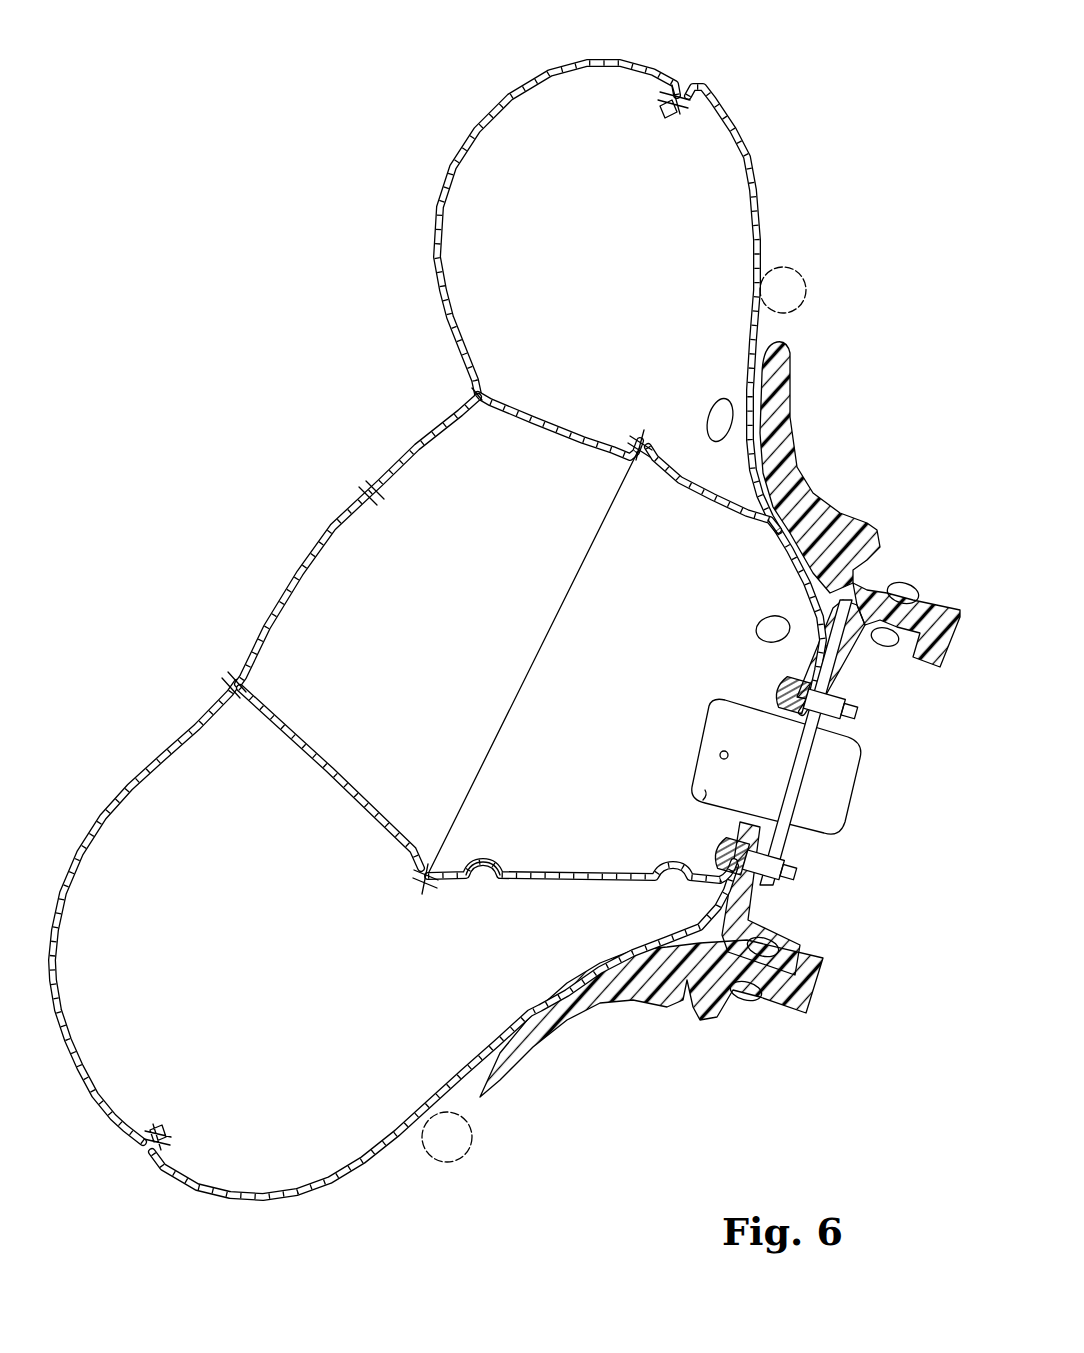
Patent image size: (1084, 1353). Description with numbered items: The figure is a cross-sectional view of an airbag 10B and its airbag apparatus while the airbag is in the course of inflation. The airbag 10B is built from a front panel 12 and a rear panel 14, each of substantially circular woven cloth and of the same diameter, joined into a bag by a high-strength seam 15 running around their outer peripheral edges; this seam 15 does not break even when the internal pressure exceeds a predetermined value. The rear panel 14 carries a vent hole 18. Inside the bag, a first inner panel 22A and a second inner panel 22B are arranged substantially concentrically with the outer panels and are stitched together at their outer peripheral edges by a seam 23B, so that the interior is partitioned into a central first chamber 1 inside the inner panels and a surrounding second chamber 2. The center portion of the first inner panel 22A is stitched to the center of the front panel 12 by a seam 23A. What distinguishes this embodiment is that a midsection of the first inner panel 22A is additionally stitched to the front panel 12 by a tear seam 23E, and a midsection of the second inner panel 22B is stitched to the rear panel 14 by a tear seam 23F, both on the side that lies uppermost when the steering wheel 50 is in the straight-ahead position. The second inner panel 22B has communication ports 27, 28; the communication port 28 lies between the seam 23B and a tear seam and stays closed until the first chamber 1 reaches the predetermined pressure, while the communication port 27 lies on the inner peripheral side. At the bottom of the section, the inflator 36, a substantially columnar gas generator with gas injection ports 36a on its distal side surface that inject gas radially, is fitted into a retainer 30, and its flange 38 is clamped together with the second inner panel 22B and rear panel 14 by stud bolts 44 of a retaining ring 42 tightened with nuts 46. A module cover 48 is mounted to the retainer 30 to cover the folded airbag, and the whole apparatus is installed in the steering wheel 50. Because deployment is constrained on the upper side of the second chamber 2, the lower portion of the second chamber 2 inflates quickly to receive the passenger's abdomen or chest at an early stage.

The airbag 10B is at (406, 229).
The first chamber 1 is at (411, 619).
The second chamber 2 is at (533, 305).
The front panel 12 is at (113, 815).
The rear panel 14 is at (358, 1178).
The seam 15 is at (682, 112).
The vent hole 18 is at (718, 402).
The first inner panel 22A is at (323, 773).
The second inner panel 22B is at (538, 880).
The seam 23A is at (370, 488).
The seam 23B is at (636, 440).
The tear seam 23E is at (468, 397).
The tear seam 23F is at (768, 525).
The communication port 27 is at (755, 630).
The communication port 28 is at (490, 862).
The retainer 30 is at (845, 610).
The inflator 36 is at (842, 787).
The gas injection ports 36a is at (752, 707).
The flange 38 is at (793, 828).
The retaining ring 42 is at (778, 690).
The stud bolts 44 is at (865, 708).
The nuts 46 is at (866, 695).
The module cover 48 is at (796, 432).
The steering wheel 50 is at (806, 282).